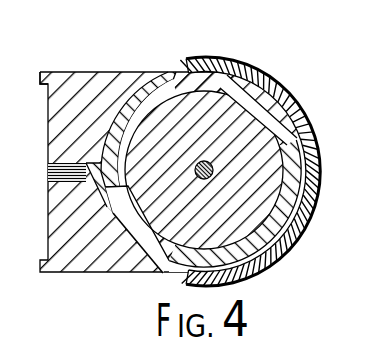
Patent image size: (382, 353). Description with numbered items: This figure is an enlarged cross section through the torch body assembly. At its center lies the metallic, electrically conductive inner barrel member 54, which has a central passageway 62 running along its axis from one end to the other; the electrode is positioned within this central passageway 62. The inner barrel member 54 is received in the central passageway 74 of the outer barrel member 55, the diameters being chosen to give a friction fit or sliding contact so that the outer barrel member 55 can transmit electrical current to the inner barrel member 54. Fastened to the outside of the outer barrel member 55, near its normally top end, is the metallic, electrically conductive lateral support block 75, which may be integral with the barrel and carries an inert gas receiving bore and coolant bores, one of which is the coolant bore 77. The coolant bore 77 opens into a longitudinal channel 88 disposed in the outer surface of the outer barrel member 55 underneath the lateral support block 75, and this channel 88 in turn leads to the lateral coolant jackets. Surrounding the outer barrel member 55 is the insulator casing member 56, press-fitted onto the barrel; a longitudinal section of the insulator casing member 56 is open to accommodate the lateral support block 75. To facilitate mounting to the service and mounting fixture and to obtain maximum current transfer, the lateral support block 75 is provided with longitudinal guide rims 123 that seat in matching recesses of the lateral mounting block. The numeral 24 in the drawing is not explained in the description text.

The longitudinal guide rim 123 is at (43, 73).
The lateral support block 75 is at (81, 84).
The coolant bore 77 is at (52, 178).
The central passageway 74 is at (179, 96).
The central passageway 62 is at (205, 164).
The insulator casing member 56 is at (271, 80).
The inner barrel member 54 is at (258, 137).
The pivot pin 24 is at (213, 167).
The channel 88 is at (115, 210).
The outer barrel member 55 is at (163, 255).